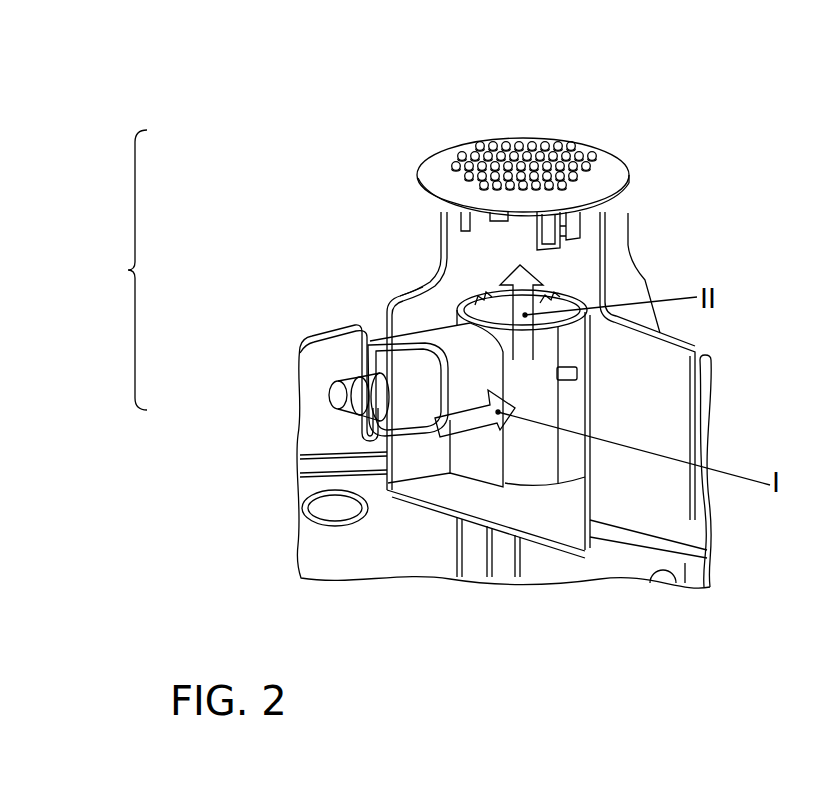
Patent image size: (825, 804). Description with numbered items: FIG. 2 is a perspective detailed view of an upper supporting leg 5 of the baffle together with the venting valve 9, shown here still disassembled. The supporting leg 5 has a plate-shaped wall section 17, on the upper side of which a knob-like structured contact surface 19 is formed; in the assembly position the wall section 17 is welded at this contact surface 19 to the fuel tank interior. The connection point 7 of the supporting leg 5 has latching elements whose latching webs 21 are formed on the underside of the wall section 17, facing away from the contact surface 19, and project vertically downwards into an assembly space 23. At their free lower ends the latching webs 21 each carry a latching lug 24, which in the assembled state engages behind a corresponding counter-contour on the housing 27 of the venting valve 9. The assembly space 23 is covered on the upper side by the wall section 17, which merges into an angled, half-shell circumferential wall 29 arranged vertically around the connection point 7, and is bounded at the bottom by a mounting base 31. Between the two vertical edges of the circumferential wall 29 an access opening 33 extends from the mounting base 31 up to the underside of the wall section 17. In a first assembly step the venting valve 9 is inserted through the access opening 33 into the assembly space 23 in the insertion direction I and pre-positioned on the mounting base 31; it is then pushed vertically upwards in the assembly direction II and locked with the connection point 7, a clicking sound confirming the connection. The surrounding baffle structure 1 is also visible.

The mounting panel 1 is at (298, 448).
The upper supporting leg 5 is at (126, 270).
The connection point 7 is at (465, 218).
The venting valve 9 is at (415, 412).
The wall section 17 is at (418, 177).
The contact surface 19 is at (458, 157).
The latching webs 21 is at (548, 215).
The assembly space 23 is at (472, 260).
The latching lug 24 is at (548, 240).
The housing 27 is at (533, 465).
The circumferential wall 29 is at (423, 287).
The mounting base 31 is at (440, 483).
The access opening 33 is at (383, 465).